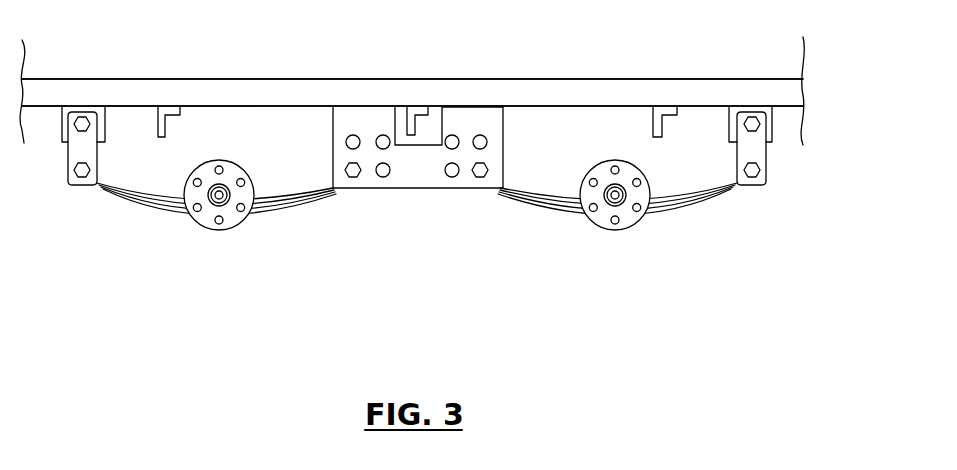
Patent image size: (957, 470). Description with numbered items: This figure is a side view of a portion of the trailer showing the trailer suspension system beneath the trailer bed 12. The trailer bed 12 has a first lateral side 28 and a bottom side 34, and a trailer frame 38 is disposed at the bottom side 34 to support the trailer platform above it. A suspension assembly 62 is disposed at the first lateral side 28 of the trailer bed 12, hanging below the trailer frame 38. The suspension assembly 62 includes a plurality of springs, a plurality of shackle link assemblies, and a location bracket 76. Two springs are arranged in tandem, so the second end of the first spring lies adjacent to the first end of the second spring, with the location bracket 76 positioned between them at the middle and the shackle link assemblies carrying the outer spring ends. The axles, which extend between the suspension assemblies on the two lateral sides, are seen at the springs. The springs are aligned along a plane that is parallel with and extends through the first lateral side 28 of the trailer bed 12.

The trailer bed 12 is at (210, 76).
The first lateral side 28 is at (713, 77).
The bottom side 34 is at (586, 114).
The trailer frame 38 is at (108, 93).
The suspension assembly 62 is at (171, 299).
The location bracket 76 is at (410, 188).